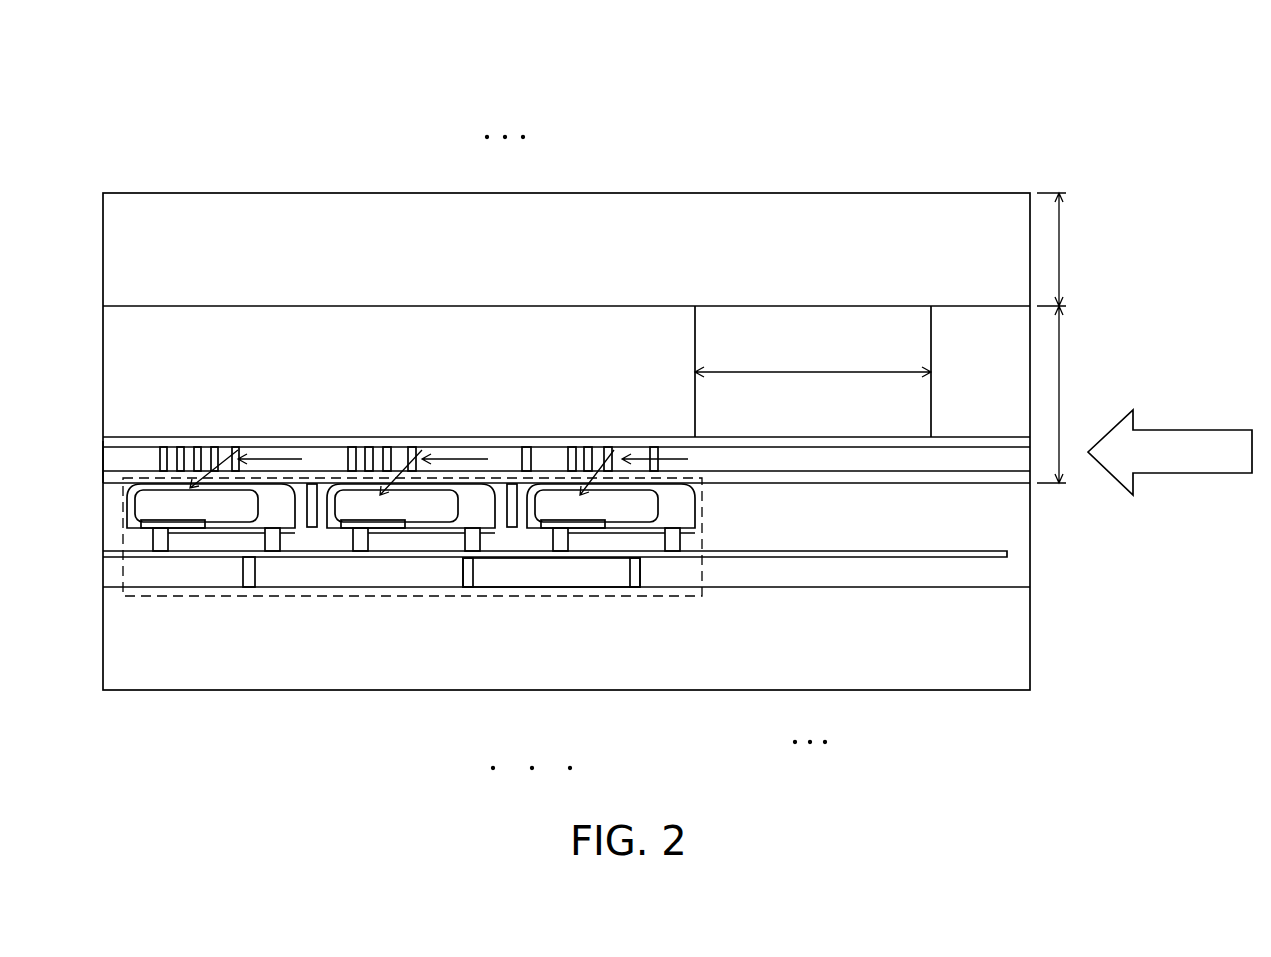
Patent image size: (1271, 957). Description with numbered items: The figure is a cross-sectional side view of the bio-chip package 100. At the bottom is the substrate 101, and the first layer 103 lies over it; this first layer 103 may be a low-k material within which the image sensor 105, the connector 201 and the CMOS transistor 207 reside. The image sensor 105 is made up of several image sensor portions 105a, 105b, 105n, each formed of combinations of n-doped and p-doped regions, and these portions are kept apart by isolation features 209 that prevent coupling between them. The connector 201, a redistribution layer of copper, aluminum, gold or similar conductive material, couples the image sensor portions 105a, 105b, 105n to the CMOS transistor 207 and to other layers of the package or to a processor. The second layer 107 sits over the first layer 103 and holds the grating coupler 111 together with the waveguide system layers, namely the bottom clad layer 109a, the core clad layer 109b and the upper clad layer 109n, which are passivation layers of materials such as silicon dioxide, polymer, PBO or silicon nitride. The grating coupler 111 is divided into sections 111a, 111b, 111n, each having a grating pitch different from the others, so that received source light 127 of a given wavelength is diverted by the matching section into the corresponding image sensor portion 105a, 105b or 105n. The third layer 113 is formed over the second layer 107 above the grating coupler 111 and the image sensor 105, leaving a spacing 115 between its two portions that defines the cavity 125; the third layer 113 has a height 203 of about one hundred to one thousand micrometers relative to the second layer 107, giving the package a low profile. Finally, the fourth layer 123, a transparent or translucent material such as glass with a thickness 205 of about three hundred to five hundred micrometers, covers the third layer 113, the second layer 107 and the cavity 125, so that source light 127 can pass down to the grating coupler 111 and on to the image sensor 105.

The bio-chip package 100 is at (63, 144).
The substrate 101 is at (112, 643).
The first layer 103 is at (112, 547).
The image sensor 105 is at (112, 510).
The image sensor portion 105a is at (232, 513).
The image sensor portion 105b is at (433, 513).
The image sensor portion 105n is at (632, 513).
The second layer 107 is at (112, 467).
The bottom clad layer 109a is at (973, 477).
The core clad layer 109b is at (863, 460).
The upper clad layer 109n is at (753, 442).
The grating coupler 111 is at (282, 455).
The grating coupler section 111a is at (188, 455).
The grating coupler section 111b is at (375, 455).
The grating coupler section 111n is at (522, 455).
The third layer 113 is at (112, 379).
The spacing 115 is at (812, 368).
The fourth layer 123 is at (112, 257).
The cavity 125 is at (889, 328).
The source light 127 is at (1212, 450).
The connector 201 is at (372, 553).
The height 203 is at (1062, 351).
The thickness 205 is at (1062, 249).
The CMOS transistor 207 is at (535, 583).
The isolation features 209 is at (312, 520).